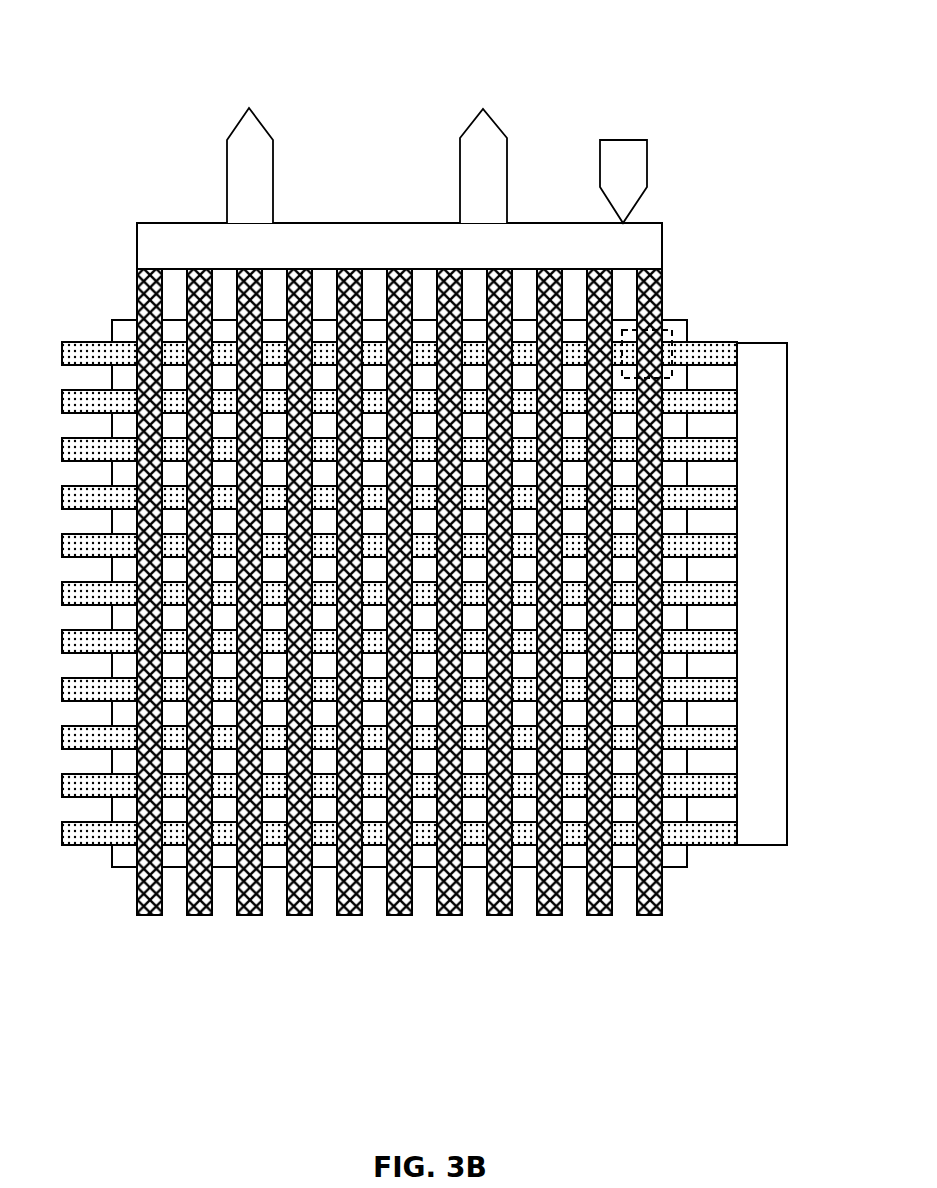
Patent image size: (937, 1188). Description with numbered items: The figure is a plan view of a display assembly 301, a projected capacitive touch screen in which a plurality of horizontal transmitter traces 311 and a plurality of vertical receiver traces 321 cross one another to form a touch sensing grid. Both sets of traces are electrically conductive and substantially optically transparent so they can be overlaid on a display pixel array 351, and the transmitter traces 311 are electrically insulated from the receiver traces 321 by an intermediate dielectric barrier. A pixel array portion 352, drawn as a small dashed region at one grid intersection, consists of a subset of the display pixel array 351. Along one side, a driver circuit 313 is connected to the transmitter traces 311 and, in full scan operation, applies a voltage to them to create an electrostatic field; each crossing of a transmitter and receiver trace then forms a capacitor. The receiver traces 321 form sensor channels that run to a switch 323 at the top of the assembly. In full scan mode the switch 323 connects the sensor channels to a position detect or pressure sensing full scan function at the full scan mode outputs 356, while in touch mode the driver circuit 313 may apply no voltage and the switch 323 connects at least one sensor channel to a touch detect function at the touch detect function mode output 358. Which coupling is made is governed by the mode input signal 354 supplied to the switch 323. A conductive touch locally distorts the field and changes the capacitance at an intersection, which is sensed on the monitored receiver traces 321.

The display assembly 301 is at (436, 489).
The transmitter traces 311 is at (713, 850).
The driver circuit 313 is at (762, 850).
The receiver traces 321 is at (585, 900).
The switch 323 is at (136, 246).
The display pixel array 351 is at (127, 867).
The pixel array portion 352 is at (665, 330).
The mode input signal 354 is at (226, 188).
The full scan mode outputs 356 is at (459, 150).
The touch detect function mode output 358 is at (647, 150).